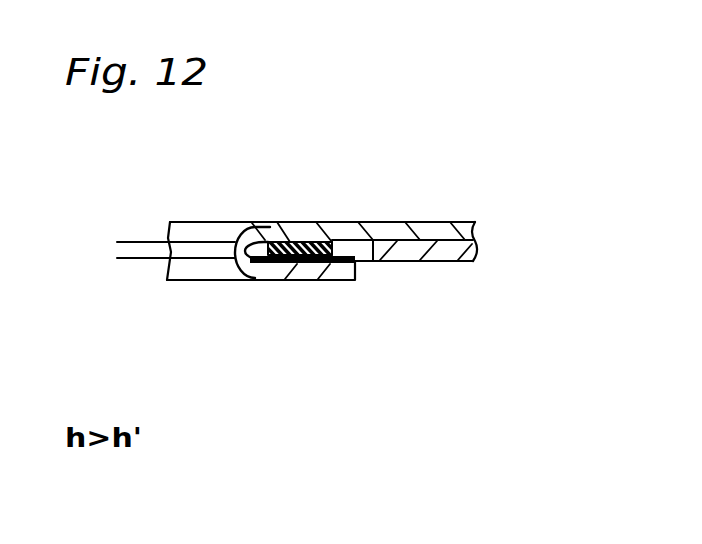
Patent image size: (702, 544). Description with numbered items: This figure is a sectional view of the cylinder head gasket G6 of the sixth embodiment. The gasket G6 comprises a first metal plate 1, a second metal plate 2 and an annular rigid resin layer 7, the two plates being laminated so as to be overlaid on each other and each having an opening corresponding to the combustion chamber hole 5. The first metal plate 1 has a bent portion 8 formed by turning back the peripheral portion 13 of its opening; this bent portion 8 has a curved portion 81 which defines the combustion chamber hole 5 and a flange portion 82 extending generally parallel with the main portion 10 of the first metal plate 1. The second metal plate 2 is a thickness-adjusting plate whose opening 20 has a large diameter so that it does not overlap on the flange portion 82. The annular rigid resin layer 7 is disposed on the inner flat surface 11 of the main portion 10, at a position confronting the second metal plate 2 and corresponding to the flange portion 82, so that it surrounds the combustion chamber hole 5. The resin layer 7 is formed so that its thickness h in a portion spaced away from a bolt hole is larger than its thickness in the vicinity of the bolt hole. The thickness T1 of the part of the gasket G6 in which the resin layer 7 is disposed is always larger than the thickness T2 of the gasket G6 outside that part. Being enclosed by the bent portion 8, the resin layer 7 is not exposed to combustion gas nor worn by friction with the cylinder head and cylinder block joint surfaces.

The combustion chamber hole 5 is at (203, 232).
The annular rigid resin layer 7 is at (309, 240).
The inner flat surface 11 is at (349, 242).
The main portion 10 is at (366, 239).
The first metal plate 1 is at (390, 226).
The second metal plate 2 is at (476, 245).
The cylinder head gasket G6 is at (448, 222).
The bent portion 8 is at (246, 308).
The peripheral portion 13 is at (280, 281).
The curved portion 81 is at (242, 264).
The flange portion 82 is at (327, 265).
The opening 20 is at (366, 252).
The thickness of rigid resin layer h is at (133, 203).
The thickness of gasket portion with resin layer T1 is at (298, 188).
The thickness of gasket portion outside resin layer T2 is at (418, 182).